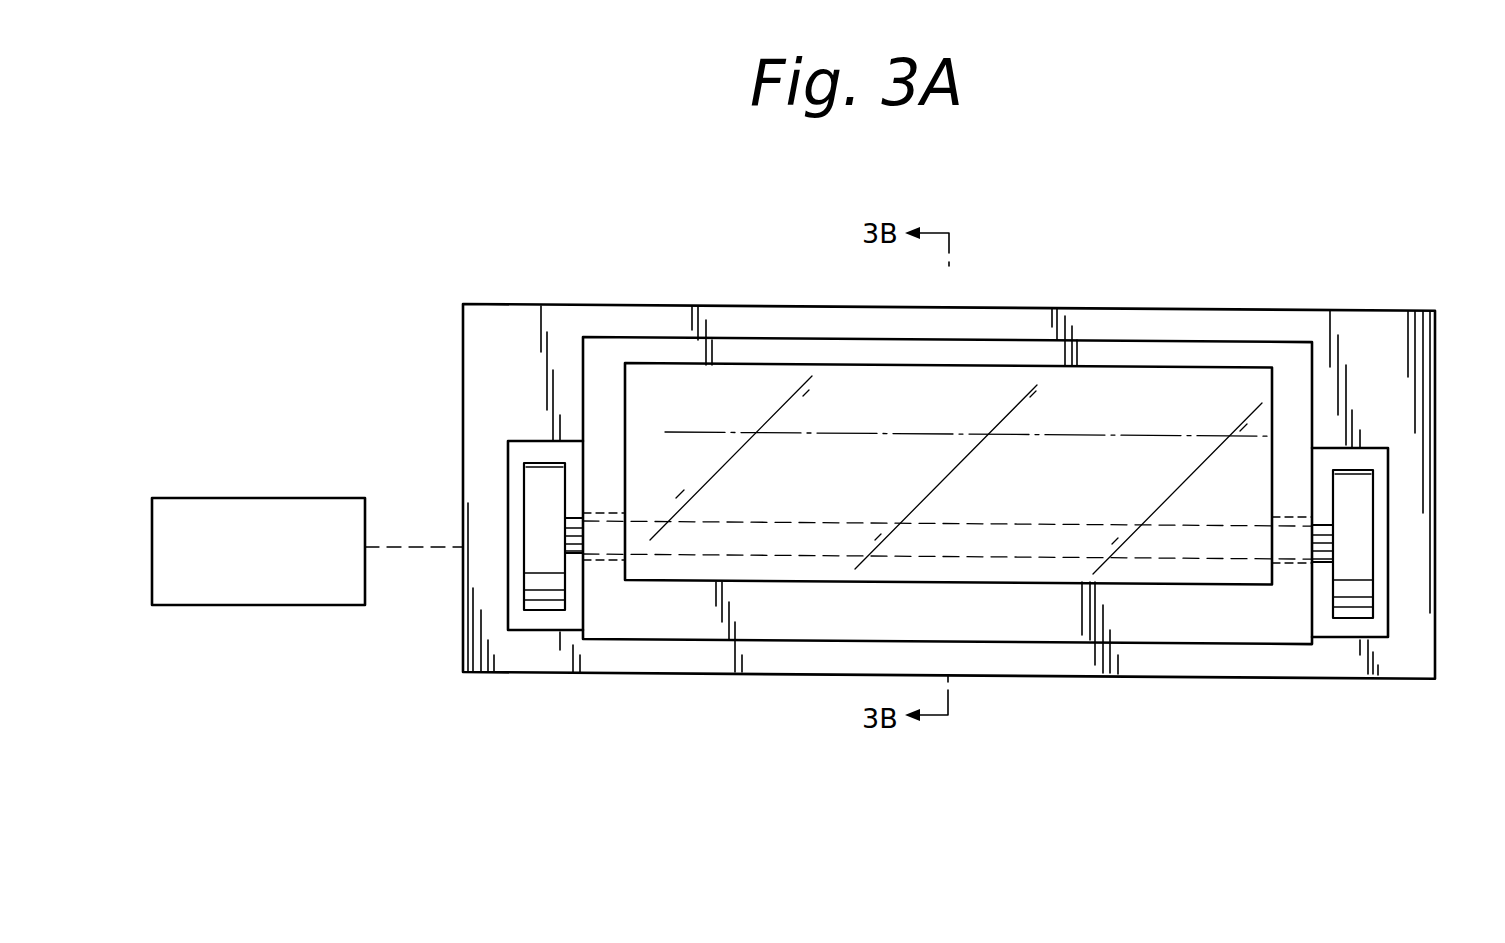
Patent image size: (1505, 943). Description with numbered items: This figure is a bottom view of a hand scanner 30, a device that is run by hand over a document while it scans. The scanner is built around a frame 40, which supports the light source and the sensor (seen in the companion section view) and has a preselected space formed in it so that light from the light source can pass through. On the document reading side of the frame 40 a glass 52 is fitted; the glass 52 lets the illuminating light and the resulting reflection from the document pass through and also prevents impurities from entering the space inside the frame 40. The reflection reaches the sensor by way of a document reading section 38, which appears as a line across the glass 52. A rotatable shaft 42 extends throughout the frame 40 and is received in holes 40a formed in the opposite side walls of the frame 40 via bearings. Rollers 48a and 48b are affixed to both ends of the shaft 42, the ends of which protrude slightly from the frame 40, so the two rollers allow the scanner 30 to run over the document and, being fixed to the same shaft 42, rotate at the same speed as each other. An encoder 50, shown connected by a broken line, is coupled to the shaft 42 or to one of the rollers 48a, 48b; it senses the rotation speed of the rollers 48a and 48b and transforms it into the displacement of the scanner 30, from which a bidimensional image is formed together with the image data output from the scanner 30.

The hand scanner 30 is at (1422, 289).
The document reading section 38 is at (720, 432).
The frame 40 is at (790, 615).
The holes 40a is at (612, 557).
The rotatable shaft 42 is at (1040, 545).
The roller 48a is at (540, 600).
The roller 48b is at (1352, 592).
The encoder 50 is at (263, 497).
The glass 52 is at (1167, 390).